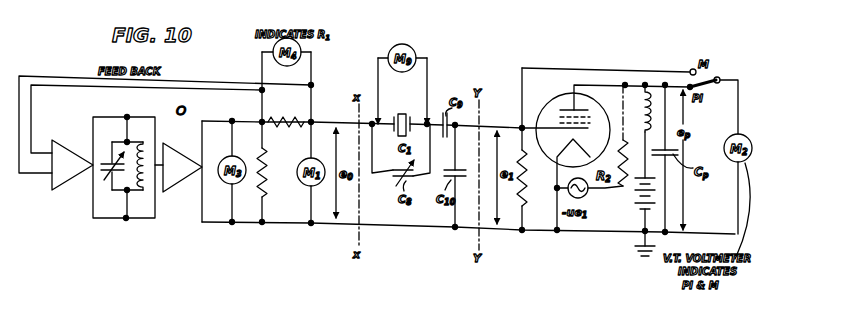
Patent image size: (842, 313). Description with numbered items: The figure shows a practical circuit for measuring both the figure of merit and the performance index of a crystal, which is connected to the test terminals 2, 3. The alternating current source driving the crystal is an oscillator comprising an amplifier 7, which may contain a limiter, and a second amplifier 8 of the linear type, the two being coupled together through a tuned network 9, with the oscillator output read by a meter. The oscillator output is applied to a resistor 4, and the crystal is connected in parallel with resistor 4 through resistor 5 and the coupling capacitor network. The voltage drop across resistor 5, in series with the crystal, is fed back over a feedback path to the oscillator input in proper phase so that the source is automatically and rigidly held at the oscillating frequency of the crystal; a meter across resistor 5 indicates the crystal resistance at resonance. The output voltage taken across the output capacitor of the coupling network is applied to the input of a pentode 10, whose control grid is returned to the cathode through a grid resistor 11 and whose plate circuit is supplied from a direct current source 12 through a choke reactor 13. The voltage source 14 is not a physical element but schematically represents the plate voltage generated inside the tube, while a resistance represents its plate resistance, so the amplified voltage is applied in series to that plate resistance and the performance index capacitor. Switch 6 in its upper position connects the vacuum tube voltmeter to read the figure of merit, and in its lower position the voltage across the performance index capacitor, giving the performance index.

The test terminal 2 is at (376, 134).
The test terminal 3 is at (424, 134).
The resistor 4 is at (266, 188).
The resistor 5 is at (287, 118).
The switch 6 is at (711, 78).
The amplifier 7 is at (62, 184).
The second amplifier 8 is at (178, 185).
The tuned network 9 is at (112, 210).
The pentode 10 is at (556, 103).
The grid resistor 11 is at (526, 192).
The direct current source 12 is at (638, 206).
The choke reactor 13 is at (650, 92).
The voltage source 14 is at (596, 190).